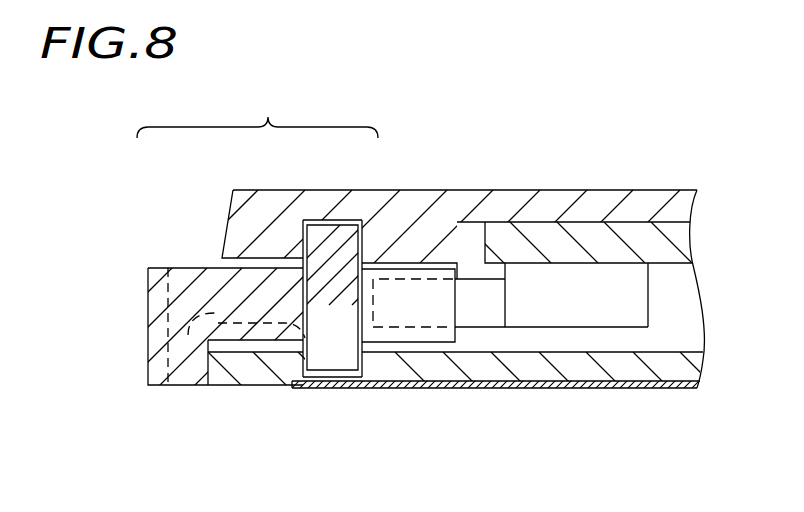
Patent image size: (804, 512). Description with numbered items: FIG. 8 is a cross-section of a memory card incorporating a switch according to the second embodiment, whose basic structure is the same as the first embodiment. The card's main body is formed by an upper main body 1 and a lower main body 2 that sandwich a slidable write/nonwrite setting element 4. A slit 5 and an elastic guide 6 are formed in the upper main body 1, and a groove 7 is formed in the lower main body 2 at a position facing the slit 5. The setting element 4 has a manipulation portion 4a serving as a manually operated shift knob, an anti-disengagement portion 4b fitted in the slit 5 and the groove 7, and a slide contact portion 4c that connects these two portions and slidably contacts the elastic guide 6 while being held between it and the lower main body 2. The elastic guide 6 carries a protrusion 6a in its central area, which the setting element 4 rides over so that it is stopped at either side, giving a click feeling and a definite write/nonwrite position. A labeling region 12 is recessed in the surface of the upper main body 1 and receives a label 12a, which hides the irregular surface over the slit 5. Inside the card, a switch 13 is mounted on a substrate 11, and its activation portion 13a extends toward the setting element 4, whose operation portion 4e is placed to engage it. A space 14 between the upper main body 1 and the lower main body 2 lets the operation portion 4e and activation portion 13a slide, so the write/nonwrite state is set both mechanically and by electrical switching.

The upper main body 1 is at (392, 368).
The lower main body 2 is at (433, 208).
The write/nonwrite setting element 4 is at (288, 236).
The manipulation portion 4a is at (160, 282).
The anti-disengagement portion 4b is at (320, 233).
The slide contact portion 4c is at (208, 282).
The operation portion 4e is at (383, 272).
The slit 5 is at (328, 373).
The elastic guide 6 is at (252, 372).
The protrusion 6a is at (183, 345).
The groove 7 is at (330, 222).
The substrate 11 is at (625, 240).
The labeling region 12 is at (560, 387).
The label 12a is at (655, 387).
The switch 13 is at (550, 280).
The activation portion 13a is at (465, 290).
The space 14 is at (424, 343).